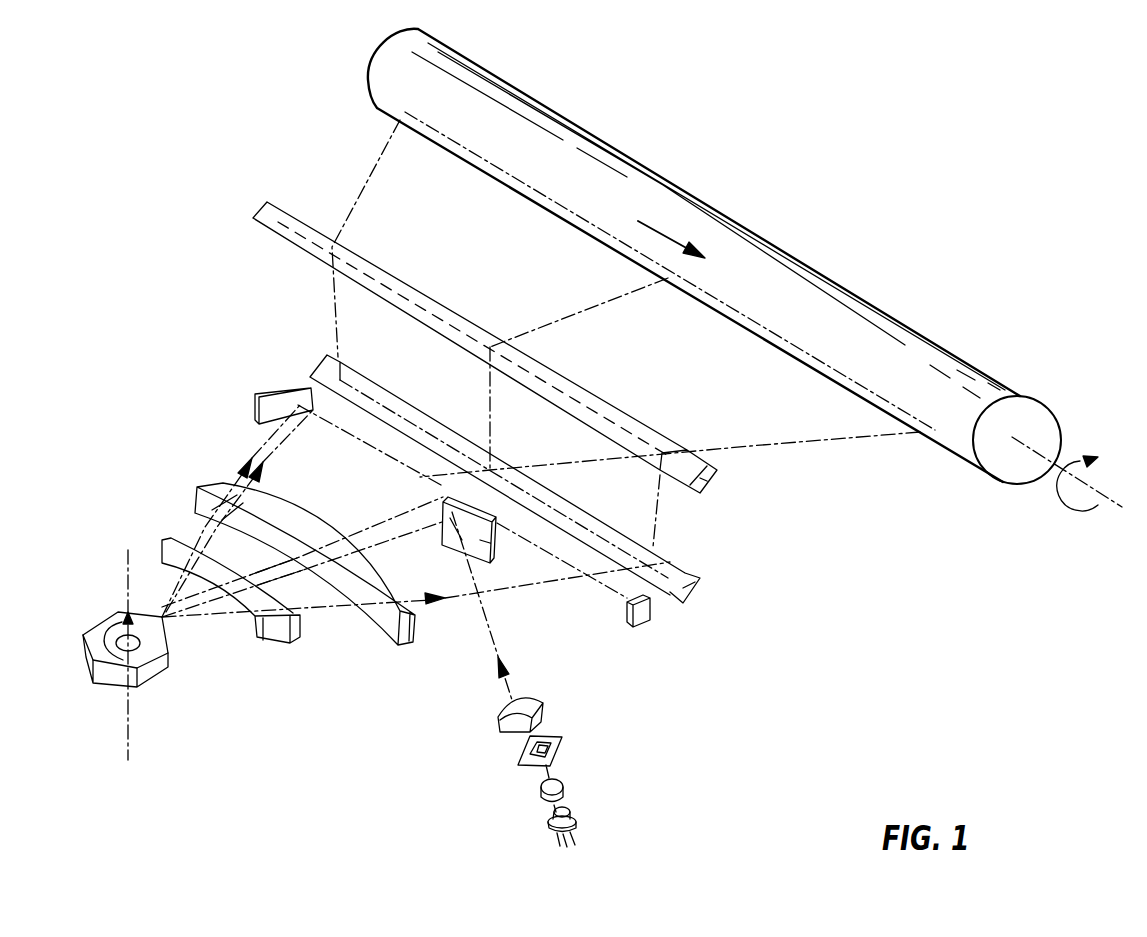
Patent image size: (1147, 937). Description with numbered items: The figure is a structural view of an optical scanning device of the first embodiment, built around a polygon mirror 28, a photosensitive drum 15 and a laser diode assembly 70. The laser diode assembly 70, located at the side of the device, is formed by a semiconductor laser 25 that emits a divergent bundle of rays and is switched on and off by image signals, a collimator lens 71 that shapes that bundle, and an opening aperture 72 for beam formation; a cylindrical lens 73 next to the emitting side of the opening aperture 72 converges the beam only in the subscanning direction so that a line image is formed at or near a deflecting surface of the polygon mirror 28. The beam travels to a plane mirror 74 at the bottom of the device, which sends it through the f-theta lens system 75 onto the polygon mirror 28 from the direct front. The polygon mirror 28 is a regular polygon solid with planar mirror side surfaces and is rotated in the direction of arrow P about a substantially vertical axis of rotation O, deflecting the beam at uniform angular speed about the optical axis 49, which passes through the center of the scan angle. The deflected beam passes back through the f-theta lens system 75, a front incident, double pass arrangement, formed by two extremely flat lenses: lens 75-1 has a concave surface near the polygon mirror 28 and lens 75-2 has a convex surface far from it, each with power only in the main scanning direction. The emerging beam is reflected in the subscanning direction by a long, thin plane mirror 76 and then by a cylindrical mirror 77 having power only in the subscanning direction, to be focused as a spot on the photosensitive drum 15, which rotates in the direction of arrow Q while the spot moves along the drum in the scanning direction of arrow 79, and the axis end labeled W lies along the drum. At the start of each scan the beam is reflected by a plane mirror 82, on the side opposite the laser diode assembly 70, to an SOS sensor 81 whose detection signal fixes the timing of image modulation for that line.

The photosensitive drum 15 is at (955, 438).
The scanning direction arrow 79 is at (662, 233).
The cylindrical mirror 77 is at (703, 494).
The plane mirror 76 is at (697, 587).
The plane mirror 74 is at (497, 547).
The SOS sensor 81 is at (650, 612).
The plane mirror 82 is at (280, 400).
The optical axis 49 is at (378, 515).
The polygon mirror 28 is at (115, 677).
The f-theta lens system 75 is at (335, 598).
The lens 75-1 is at (231, 625).
The lens 75-2 is at (425, 614).
The laser diode assembly 70 is at (560, 782).
The cylindrical lens 73 is at (530, 700).
The opening aperture 72 is at (558, 748).
The collimator lens 71 is at (563, 793).
The semiconductor laser 25 is at (577, 823).
The rotation direction arrow P is at (105, 632).
The axis of rotation O is at (84, 516).
The rotation direction arrow Q is at (1090, 472).
The drum rotation axis W is at (1113, 495).